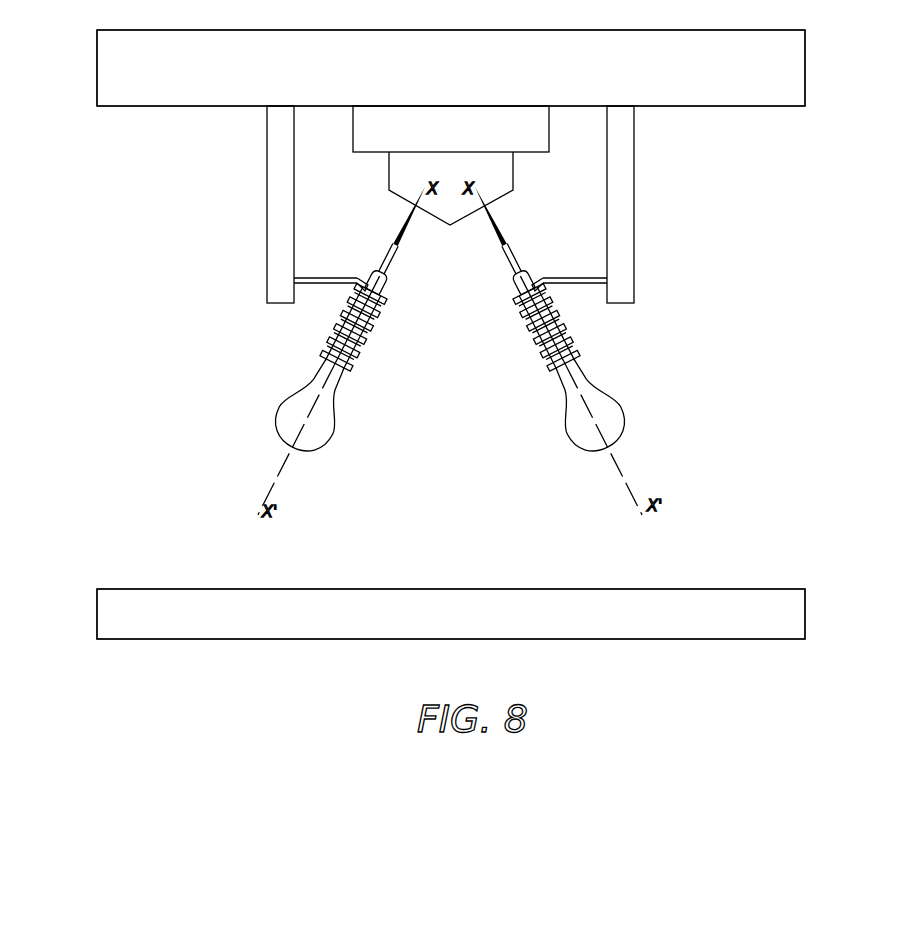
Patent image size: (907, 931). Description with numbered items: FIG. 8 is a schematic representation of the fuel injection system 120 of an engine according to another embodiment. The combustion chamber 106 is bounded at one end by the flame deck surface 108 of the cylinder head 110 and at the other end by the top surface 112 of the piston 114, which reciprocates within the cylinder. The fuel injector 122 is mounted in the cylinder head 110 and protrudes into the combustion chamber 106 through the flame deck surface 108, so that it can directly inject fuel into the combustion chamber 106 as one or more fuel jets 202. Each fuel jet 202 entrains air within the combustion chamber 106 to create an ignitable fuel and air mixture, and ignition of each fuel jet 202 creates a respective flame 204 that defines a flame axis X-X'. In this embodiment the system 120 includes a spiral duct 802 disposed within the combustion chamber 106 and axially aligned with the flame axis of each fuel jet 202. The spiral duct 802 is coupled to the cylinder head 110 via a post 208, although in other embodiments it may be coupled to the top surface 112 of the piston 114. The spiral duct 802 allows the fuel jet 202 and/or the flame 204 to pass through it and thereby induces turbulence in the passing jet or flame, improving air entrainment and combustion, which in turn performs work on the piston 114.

The combustion chamber 106 is at (452, 562).
The flame deck surface 108 is at (748, 106).
The cylinder head 110 is at (451, 68).
The top surface 112 is at (758, 589).
The piston 114 is at (451, 614).
The fuel injection system 120 is at (676, 290).
The fuel injector 122 is at (451, 165).
The fuel jet 202 is at (502, 247).
The flame 204 is at (297, 378).
The post 208 is at (267, 201).
The spiral duct 802 is at (340, 327).